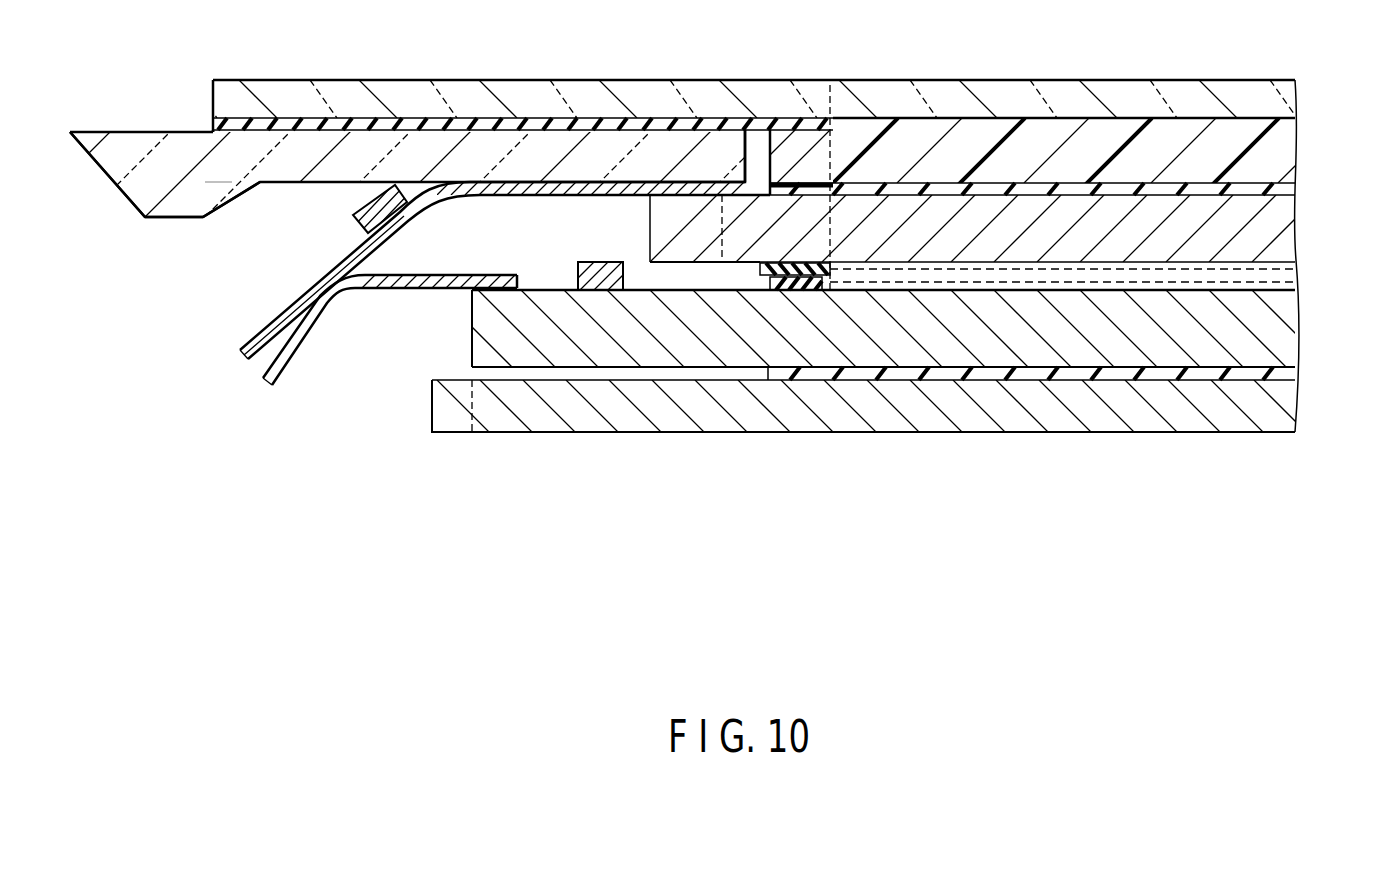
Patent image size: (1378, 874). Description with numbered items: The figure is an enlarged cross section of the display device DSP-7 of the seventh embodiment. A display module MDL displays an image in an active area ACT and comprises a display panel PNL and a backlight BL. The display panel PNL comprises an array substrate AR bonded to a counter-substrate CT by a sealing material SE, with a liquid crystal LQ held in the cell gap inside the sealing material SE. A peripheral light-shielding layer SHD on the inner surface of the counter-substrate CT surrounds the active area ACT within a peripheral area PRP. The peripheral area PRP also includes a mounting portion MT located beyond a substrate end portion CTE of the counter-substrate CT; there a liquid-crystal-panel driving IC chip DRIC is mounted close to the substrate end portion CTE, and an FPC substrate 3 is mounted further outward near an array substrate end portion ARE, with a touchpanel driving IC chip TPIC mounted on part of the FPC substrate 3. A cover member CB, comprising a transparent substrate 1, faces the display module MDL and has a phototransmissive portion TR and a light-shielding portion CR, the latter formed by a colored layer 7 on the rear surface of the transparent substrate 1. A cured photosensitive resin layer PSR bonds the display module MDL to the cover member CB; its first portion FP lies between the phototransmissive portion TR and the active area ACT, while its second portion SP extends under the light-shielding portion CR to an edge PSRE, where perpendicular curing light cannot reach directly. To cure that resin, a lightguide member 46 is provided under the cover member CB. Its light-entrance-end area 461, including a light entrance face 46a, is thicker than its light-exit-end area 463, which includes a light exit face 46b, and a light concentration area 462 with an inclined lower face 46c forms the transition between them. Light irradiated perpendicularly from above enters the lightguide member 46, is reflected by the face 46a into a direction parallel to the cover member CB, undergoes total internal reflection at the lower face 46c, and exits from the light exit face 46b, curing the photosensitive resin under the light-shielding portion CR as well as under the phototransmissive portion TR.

The transparent substrate 1 is at (1298, 103).
The FPC substrate 3 is at (323, 278).
The colored layer 7 is at (268, 130).
The lightguide member 46 is at (173, 217).
The light entrance face 46a is at (109, 177).
The light exit face 46b is at (757, 152).
The lower face 46c is at (237, 197).
The light-entrance-end area 461 is at (162, 192).
The light concentration area 462 is at (232, 178).
The light-exit-end area 463 is at (550, 163).
The cover member CB is at (205, 100).
The light-shielding portion CR is at (831, 75).
The phototransmissive portion TR is at (1295, 75).
The second portion SP is at (795, 150).
The first portion FP is at (913, 148).
The active area ACT is at (1295, 170).
The touchpanel driving IC chip TPIC is at (355, 214).
The mounting portion MT is at (563, 260).
The liquid-crystal-panel driving IC chip DRIC is at (597, 272).
The array substrate end portion ARE is at (463, 323).
The display panel PNL is at (463, 371).
The substrate end portion CTE is at (648, 264).
The edge PSRE is at (743, 163).
The peripheral light-shielding layer SHD is at (775, 266).
The sealing material SE is at (800, 287).
The array substrate AR is at (857, 347).
The liquid crystal LQ is at (897, 275).
The counter-substrate CT is at (940, 247).
The cured photosensitive resin layer PSR is at (988, 173).
The backlight BL is at (1263, 423).
The display module MDL is at (1303, 185).
The peripheral area PRP is at (830, 488).
The display device DSP-7 is at (705, 562).